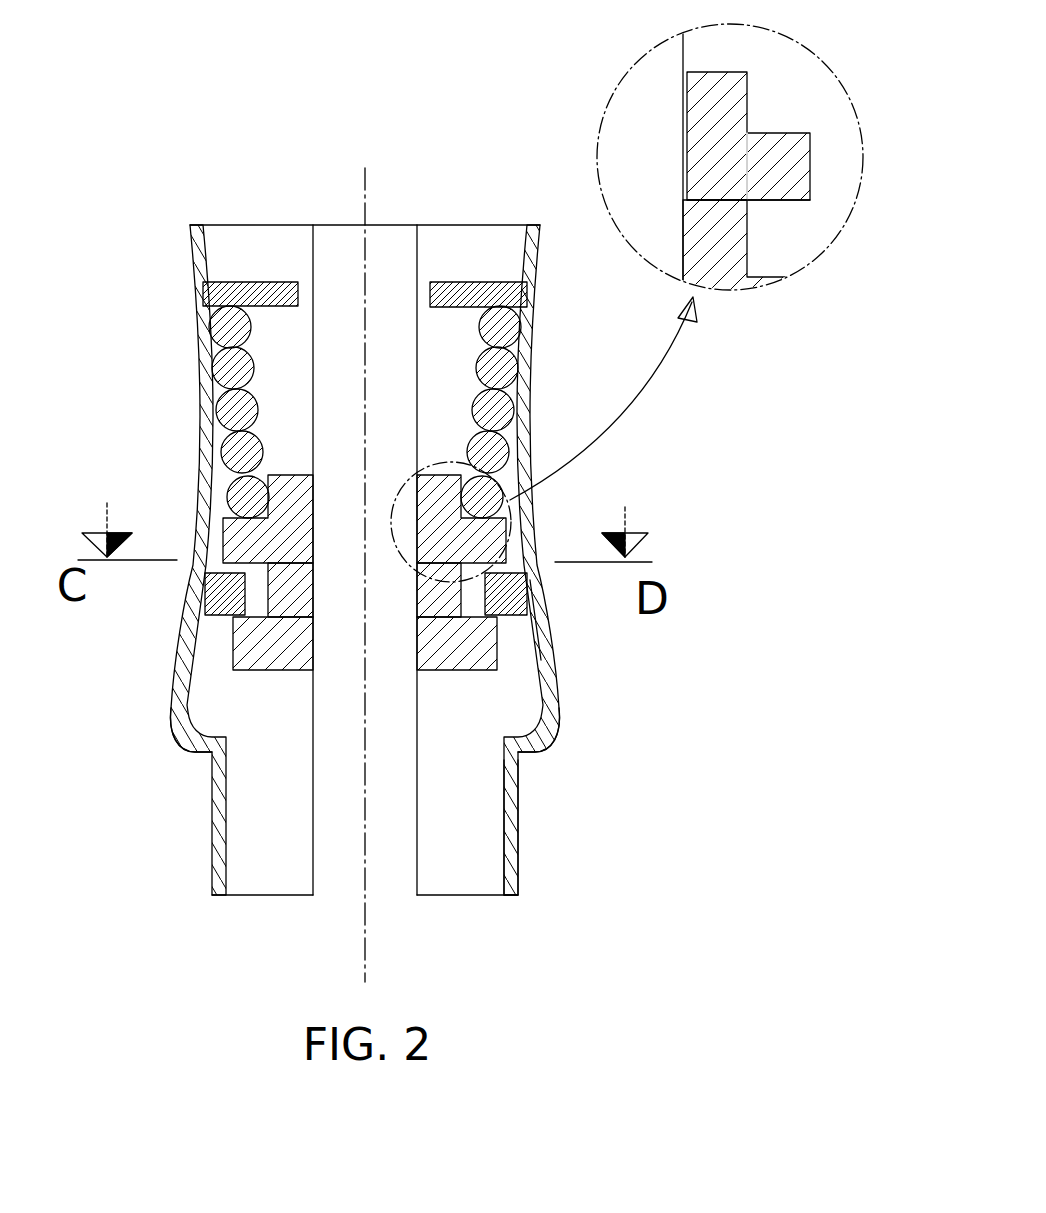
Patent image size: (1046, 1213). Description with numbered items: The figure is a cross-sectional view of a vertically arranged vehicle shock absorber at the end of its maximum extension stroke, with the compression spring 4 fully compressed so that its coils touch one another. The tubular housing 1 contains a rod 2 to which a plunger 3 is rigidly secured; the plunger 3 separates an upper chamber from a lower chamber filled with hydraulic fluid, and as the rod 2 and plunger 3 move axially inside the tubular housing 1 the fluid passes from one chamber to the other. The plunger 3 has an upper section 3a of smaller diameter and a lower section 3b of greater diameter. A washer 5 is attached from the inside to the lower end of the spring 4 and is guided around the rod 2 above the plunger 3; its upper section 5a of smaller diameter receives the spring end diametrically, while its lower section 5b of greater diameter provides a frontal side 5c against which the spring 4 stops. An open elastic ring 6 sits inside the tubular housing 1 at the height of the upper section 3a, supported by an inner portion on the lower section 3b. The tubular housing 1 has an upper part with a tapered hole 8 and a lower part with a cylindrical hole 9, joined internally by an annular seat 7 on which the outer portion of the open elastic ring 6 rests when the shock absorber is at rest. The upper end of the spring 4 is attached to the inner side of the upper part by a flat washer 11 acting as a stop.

The tubular housing 1 is at (521, 822).
The rod 2 is at (340, 275).
The plunger 3 is at (308, 766).
The upper section of plunger 3a is at (278, 573).
The lower section of plunger 3b is at (258, 638).
The spring 4 is at (470, 410).
The washer 5 is at (266, 520).
The upper section of washer 5a is at (722, 136).
The lower section of washer 5b is at (763, 178).
The frontal side 5c is at (777, 134).
The open elastic ring 6 is at (203, 595).
The annular seat 7 is at (207, 722).
The tapered hole 8 is at (531, 666).
The cylindrical hole 9 is at (497, 852).
The flat washer 11 is at (466, 290).